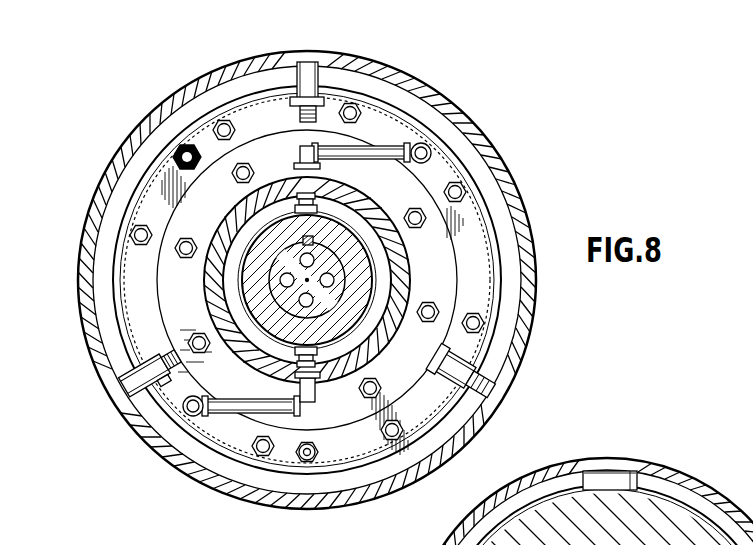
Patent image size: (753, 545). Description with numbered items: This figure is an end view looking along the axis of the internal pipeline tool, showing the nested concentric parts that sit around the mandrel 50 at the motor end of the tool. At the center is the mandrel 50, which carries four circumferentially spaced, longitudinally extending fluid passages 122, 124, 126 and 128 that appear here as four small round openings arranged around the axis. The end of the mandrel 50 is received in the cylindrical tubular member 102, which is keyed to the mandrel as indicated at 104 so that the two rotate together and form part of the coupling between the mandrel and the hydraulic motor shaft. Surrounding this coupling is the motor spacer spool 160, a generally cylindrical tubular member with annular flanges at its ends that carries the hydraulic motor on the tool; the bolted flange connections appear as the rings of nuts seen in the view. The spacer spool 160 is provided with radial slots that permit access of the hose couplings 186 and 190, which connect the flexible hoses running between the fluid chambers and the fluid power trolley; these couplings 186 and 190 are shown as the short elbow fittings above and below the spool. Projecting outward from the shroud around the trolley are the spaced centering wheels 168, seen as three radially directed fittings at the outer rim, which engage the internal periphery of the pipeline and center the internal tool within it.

The mandrel 50 is at (268, 295).
The cylindrical tubular member 102 is at (374, 350).
The key 104 is at (292, 250).
The fluid passage 122 is at (275, 238).
The fluid passage 124 is at (286, 348).
The fluid passage 126 is at (279, 280).
The fluid passage 128 is at (396, 326).
The motor spacer spool 160 is at (312, 238).
The centering wheels 168 is at (305, 60).
The coupling 186 is at (298, 150).
The coupling 190 is at (321, 392).